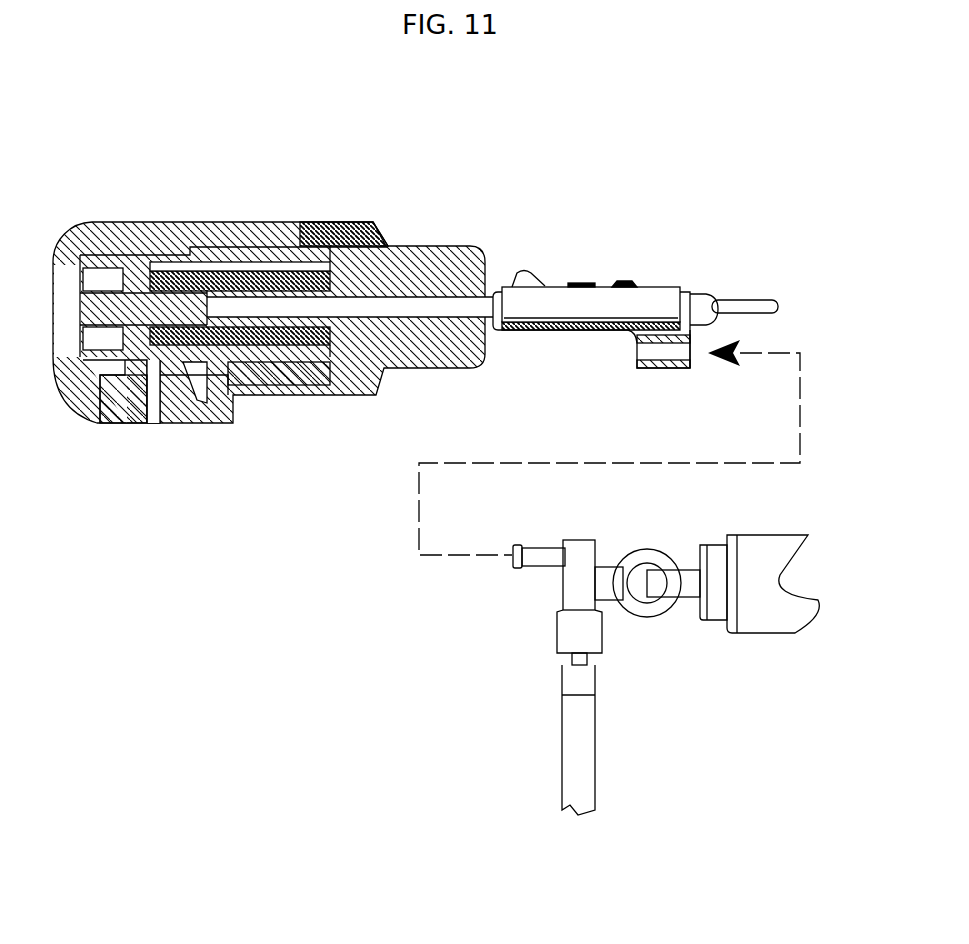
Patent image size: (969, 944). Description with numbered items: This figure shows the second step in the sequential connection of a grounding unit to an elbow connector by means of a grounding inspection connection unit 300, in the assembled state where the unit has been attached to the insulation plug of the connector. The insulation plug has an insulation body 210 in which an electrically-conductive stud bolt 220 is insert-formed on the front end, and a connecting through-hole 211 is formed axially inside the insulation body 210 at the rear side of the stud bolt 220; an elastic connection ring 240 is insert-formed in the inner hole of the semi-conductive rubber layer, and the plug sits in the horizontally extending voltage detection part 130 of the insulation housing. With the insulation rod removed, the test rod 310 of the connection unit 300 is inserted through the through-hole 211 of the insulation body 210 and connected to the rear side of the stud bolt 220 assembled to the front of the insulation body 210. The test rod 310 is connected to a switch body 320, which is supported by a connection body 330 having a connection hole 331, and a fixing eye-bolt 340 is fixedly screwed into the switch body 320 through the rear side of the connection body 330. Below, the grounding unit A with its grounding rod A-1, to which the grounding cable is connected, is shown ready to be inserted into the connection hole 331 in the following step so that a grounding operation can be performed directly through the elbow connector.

The voltage detection part 130 is at (265, 383).
The insulation body 210 is at (403, 232).
The connecting through-hole 211 is at (340, 223).
The stud bolt 220 is at (143, 272).
The elastic connection ring 240 is at (240, 267).
The grounding inspection connection unit 300 is at (640, 303).
The test rod 310 is at (473, 308).
The switch body 320 is at (565, 300).
The connection body 330 is at (545, 336).
The connection hole 331 is at (660, 355).
The fixing eye-bolt 340 is at (748, 310).
The grounding rod A-1 is at (533, 557).
The grounding unit A is at (570, 620).